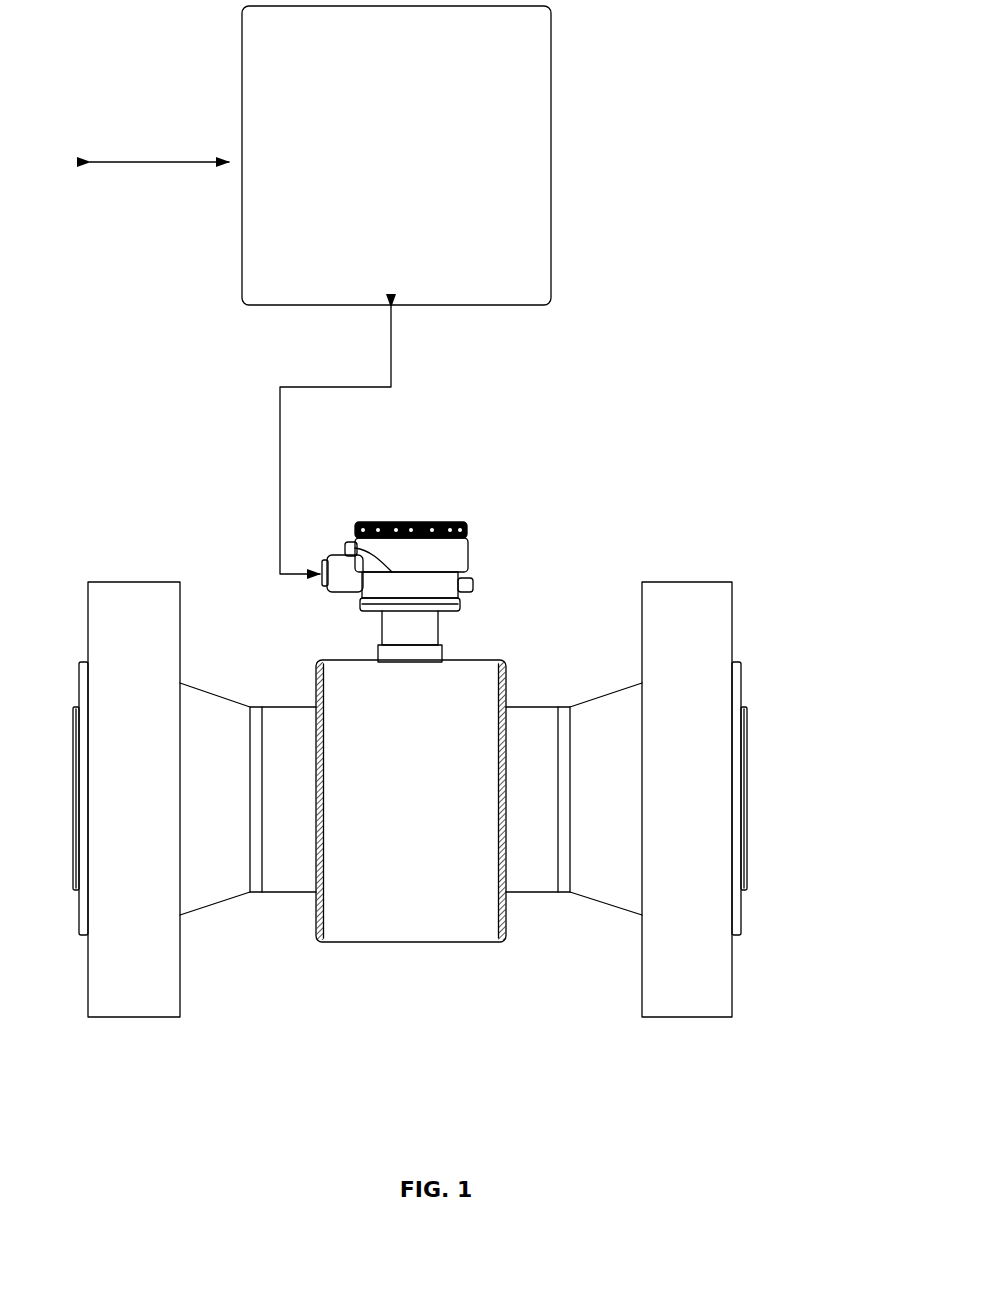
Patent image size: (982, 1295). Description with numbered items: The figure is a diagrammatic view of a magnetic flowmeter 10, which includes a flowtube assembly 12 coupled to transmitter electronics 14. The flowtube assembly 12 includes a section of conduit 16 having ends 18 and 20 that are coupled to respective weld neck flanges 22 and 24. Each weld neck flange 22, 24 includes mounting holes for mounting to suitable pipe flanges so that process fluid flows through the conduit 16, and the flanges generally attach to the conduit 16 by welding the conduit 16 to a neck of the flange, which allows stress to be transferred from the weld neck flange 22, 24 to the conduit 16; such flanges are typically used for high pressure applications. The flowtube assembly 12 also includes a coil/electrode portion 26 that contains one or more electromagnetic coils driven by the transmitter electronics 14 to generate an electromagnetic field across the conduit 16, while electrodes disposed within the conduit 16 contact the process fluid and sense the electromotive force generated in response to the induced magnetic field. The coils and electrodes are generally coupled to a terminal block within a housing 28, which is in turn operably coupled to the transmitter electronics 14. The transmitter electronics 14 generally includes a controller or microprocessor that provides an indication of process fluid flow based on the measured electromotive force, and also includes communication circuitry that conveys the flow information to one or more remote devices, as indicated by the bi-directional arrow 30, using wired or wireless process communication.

The magnetic flowmeter 10 is at (452, 550).
The flowtube assembly 12 is at (410, 793).
The transmitter electronics 14 is at (555, 258).
The conduit 16 is at (523, 897).
The end 18 is at (253, 893).
The end 20 is at (563, 897).
The weld neck flange 22 is at (138, 1017).
The weld neck flange 24 is at (692, 1017).
The coil/electrode portion 26 is at (367, 942).
The housing 28 is at (470, 548).
The bi-directional arrow 30 is at (150, 160).